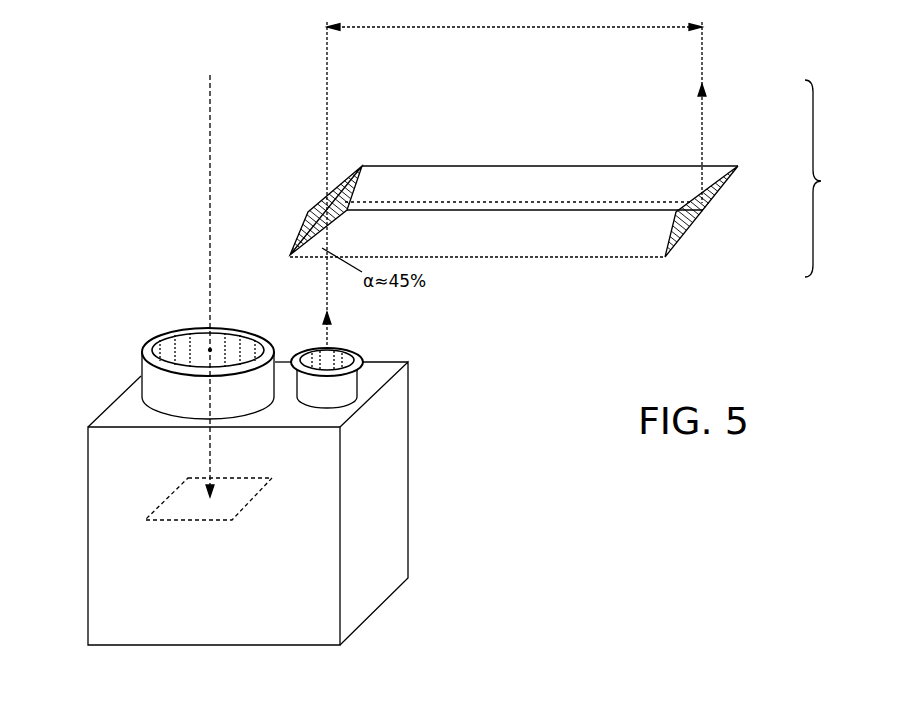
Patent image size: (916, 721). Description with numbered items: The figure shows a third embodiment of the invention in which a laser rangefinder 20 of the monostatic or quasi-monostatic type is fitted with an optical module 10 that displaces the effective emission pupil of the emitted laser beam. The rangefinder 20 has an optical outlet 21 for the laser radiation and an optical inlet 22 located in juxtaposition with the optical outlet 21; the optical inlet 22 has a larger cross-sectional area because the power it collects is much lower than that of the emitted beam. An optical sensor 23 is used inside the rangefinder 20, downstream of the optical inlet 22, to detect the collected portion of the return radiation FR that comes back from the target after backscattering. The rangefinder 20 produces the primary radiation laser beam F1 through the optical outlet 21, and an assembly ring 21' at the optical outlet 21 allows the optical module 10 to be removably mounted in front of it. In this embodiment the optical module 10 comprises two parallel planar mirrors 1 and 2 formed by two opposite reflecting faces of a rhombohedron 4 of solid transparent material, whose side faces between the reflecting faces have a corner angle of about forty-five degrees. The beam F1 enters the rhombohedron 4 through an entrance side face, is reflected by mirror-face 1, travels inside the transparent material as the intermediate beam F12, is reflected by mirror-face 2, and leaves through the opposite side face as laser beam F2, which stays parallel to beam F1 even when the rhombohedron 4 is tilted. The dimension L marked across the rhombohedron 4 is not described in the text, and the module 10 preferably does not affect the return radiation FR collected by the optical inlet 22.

The reflector assembly 1 is at (312, 208).
The reflector assembly 2 is at (698, 235).
The rhombohedron 4 is at (538, 180).
The optical module 10 is at (829, 178).
The laser rangefinder 20 is at (382, 487).
The optical outlet 21 is at (384, 385).
The assembly ring 21' is at (347, 329).
The optical inlet 22 is at (167, 335).
The optical sensor 23 is at (172, 492).
The blade length L is at (514, 173).
The primary radiation laser beam F1 is at (323, 343).
The laser beam F2 is at (705, 119).
The intermediate beam F12 is at (477, 203).
The return radiation FR is at (208, 130).